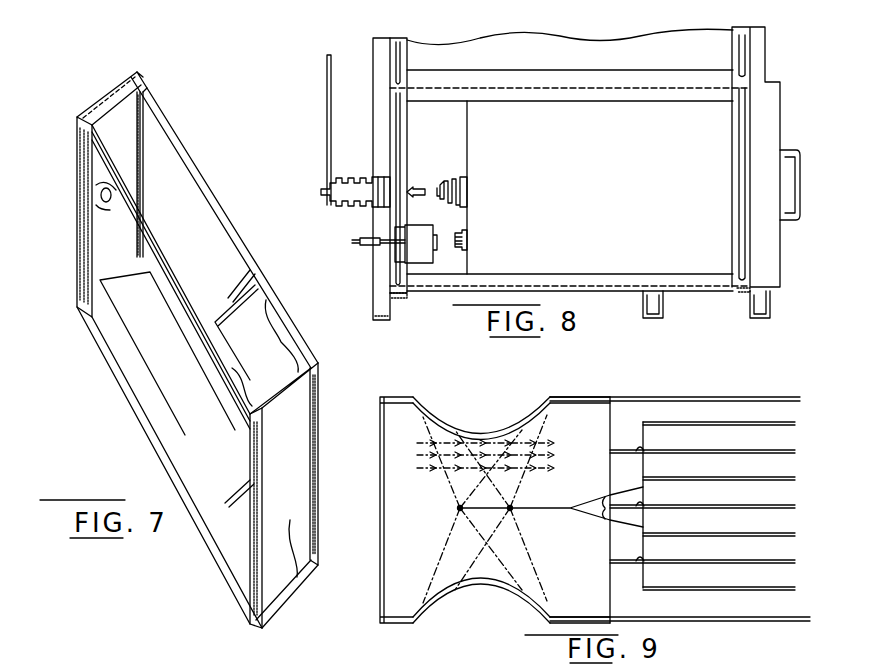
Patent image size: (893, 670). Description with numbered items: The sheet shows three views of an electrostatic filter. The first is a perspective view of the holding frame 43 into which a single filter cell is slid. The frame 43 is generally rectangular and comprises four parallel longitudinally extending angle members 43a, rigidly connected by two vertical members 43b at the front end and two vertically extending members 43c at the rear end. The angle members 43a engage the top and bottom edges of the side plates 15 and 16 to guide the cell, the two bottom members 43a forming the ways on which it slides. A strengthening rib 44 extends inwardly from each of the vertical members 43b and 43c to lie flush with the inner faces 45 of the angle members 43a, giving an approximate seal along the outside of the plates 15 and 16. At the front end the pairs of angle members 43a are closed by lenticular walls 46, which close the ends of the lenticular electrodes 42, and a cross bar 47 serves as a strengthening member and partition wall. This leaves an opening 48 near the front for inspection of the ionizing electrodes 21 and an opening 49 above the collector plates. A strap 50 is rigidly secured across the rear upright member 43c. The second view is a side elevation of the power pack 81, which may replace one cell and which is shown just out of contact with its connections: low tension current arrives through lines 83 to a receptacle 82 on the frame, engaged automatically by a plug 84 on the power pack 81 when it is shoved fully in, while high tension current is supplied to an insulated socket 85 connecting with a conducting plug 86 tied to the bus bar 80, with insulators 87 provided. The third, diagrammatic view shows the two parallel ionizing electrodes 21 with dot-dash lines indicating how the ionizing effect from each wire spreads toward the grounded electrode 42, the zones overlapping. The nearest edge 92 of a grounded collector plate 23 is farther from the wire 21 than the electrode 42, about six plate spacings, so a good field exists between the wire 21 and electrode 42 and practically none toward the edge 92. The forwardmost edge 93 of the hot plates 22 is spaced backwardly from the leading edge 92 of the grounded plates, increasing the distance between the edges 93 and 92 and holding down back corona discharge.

In FIG. 7, the holding frame 43 is at (220, 186).
In FIG. 7, the longitudinally extending angle members 43a is at (190, 290).
In FIG. 7, the front vertical members 43b is at (317, 437).
In FIG. 7, the rear vertical members 43c is at (145, 127).
In FIG. 7, the strengthening rib 44 is at (142, 145).
In FIG. 7, the inner faces of the angle members 45 is at (150, 278).
In FIG. 7, the lenticular walls 46 is at (280, 337).
In FIG. 7, the cross bar 47 is at (232, 293).
In FIG. 7, the opening 48 is at (236, 332).
In FIG. 7, the opening 49 is at (163, 158).
In FIG. 7, the strap 50 is at (106, 203).
In FIG. 8, the bus bar 80 is at (327, 125).
In FIG. 8, the power pack 81 is at (586, 173).
In FIG. 8, the receptacle 82 is at (420, 255).
In FIG. 8, the lines 83 is at (365, 240).
In FIG. 8, the plug 84 is at (458, 235).
In FIG. 8, the insulated socket 85 is at (441, 183).
In FIG. 8, the conducting plug 86 is at (408, 187).
In FIG. 8, the insulators 87 is at (386, 178).
In FIG. 9, the side plate 15 is at (724, 397).
In FIG. 9, the side plate 16 is at (730, 619).
In FIG. 9, the ionizing electrodes 21 is at (458, 510).
In FIG. 9, the hot plates 22 is at (726, 419).
In FIG. 9, the grounded collector plate 23 is at (686, 447).
In FIG. 9, the grounded electrodes 42 is at (448, 428).
In FIG. 9, the leading edge of the grounded plates 92 is at (636, 450).
In FIG. 9, the forwardmost edge of the hot plates 93 is at (643, 422).